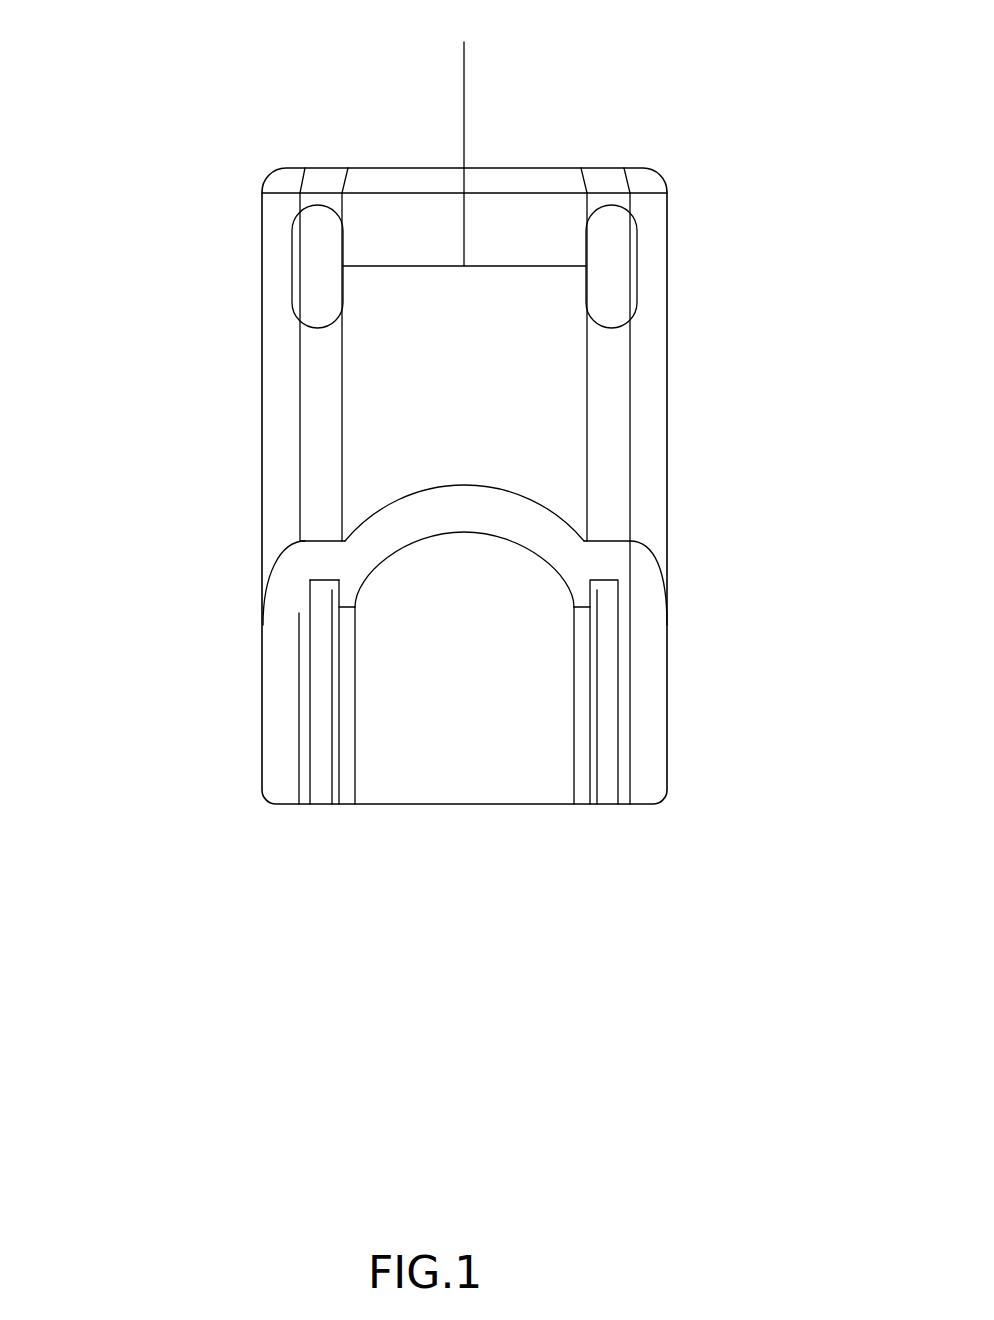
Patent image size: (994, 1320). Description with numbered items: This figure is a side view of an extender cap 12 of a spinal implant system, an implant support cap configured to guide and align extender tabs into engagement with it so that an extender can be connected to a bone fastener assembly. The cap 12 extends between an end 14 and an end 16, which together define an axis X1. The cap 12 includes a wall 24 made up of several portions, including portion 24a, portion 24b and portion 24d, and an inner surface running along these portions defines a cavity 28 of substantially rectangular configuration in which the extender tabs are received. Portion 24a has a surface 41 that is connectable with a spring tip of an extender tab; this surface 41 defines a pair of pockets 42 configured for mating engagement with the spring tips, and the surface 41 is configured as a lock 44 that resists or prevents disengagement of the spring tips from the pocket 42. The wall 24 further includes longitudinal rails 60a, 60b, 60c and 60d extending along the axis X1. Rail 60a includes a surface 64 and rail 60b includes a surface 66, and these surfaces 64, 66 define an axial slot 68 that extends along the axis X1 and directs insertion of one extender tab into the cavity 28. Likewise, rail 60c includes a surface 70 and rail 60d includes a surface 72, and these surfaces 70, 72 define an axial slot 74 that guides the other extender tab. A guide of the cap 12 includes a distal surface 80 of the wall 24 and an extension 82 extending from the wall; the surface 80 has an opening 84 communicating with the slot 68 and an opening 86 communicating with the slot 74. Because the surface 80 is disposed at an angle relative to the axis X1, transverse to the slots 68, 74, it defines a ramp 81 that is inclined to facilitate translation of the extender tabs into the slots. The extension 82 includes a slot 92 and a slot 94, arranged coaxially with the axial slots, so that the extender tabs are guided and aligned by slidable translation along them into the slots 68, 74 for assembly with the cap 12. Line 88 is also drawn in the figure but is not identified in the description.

The extender cap 12 is at (85, 201).
The axis X1 is at (470, 141).
The end 14 is at (297, 167).
The end 16 is at (431, 806).
The wall 24 is at (648, 390).
The portion 24a is at (408, 232).
The portion 24b is at (668, 306).
The portion 24d is at (262, 398).
The cavity 28 is at (539, 118).
The surface 41 is at (633, 307).
The pocket 42 is at (310, 280).
The lock 44 is at (603, 327).
The longitudinal rail 60a is at (310, 594).
The longitudinal rail 60b is at (349, 588).
The longitudinal rail 60c is at (578, 585).
The longitudinal rail 60d is at (662, 584).
The surface 64 is at (299, 614).
The surface 66 is at (339, 617).
The axial slot 68 is at (293, 604).
The surface 70 is at (590, 712).
The surface 72 is at (627, 616).
The axial slot 74 is at (632, 596).
The distal surface 80 is at (515, 527).
The ramp 81 is at (557, 556).
The extension 82 is at (540, 787).
The opening 84 is at (309, 583).
The opening 86 is at (316, 790).
The second tab inner line 88 is at (600, 618).
The slot 92 is at (332, 600).
The slot 94 is at (605, 790).